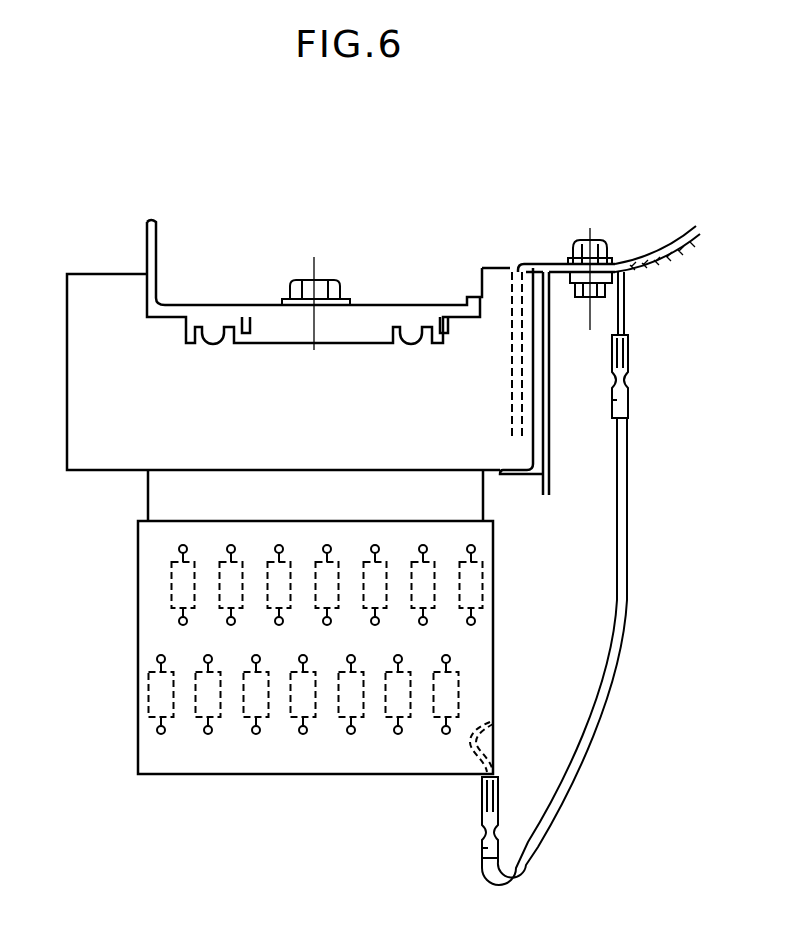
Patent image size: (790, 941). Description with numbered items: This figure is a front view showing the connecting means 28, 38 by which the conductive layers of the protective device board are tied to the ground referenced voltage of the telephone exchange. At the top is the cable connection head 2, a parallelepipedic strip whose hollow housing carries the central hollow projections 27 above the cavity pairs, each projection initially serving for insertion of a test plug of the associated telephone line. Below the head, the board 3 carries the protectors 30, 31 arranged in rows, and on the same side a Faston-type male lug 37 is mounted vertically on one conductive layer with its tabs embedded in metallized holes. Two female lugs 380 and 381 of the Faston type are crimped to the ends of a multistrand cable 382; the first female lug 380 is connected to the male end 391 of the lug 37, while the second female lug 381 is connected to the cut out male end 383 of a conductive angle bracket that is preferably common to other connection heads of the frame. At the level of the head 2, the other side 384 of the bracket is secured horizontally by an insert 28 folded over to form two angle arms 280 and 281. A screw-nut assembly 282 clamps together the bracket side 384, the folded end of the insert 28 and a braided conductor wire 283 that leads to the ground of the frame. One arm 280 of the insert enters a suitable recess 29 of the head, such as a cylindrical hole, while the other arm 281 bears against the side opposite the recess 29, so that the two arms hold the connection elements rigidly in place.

The cable head 2 is at (67, 358).
The hollow projection 27 is at (148, 496).
The insert 28 is at (548, 264).
The recess 29 is at (512, 447).
The fuse box 3 is at (138, 643).
The protectors 30 is at (172, 590).
The protectors 31 is at (155, 697).
The male lug 37 is at (490, 722).
The connecting means 38 is at (666, 477).
The angle arm 280 is at (512, 380).
The angle arm 281 is at (537, 400).
The screw-nut assembly 282 is at (575, 258).
The braided conductor wire 283 is at (653, 258).
The female lug 380 is at (482, 832).
The female lug 381 is at (628, 383).
The multistrand cable 382 is at (620, 633).
The cut out male end 383 is at (624, 303).
The other side of the bracket 384 is at (575, 292).
The crimp portion 391 is at (497, 790).